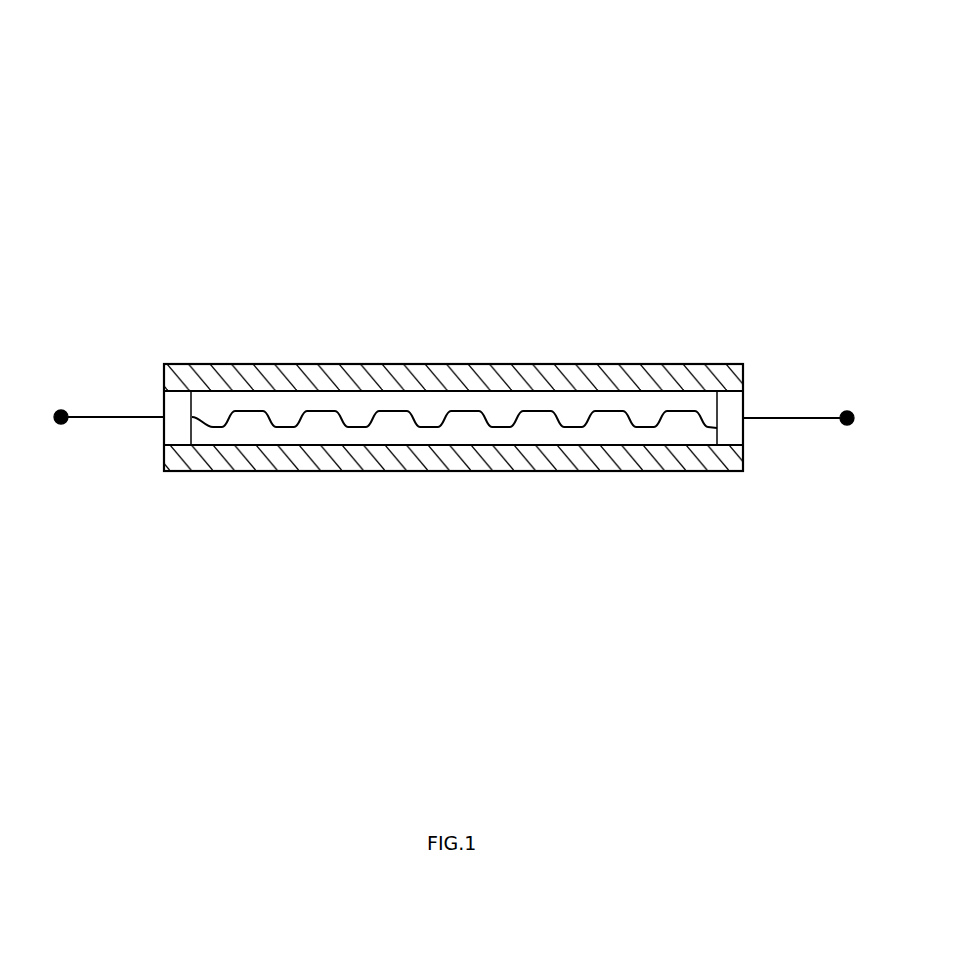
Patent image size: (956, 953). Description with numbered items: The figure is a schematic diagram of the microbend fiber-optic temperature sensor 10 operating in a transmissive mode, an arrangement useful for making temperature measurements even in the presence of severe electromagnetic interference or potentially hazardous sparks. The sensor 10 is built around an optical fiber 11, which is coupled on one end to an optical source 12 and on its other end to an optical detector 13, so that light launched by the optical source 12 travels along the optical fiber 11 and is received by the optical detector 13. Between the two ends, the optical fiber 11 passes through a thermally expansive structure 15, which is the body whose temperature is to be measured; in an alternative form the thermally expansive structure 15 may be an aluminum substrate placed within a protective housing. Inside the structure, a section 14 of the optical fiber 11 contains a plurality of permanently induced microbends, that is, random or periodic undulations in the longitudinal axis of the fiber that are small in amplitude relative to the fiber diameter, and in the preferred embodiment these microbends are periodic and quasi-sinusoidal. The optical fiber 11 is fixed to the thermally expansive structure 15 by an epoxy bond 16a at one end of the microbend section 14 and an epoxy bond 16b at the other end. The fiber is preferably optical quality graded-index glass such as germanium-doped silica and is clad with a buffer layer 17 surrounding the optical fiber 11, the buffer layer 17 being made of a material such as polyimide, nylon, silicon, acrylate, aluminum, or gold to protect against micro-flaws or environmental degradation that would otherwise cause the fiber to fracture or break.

The microbend fiber-optic temperature sensor 10 is at (439, 143).
The optical fiber 11 is at (123, 406).
The optical source 12 is at (45, 417).
The optical detector 13 is at (863, 418).
The microbend section 14 is at (492, 440).
The thermally expansive structure 15 is at (366, 359).
The epoxy bond 16a is at (158, 433).
The epoxy bond 16b is at (753, 433).
The buffer layer 17 is at (266, 423).